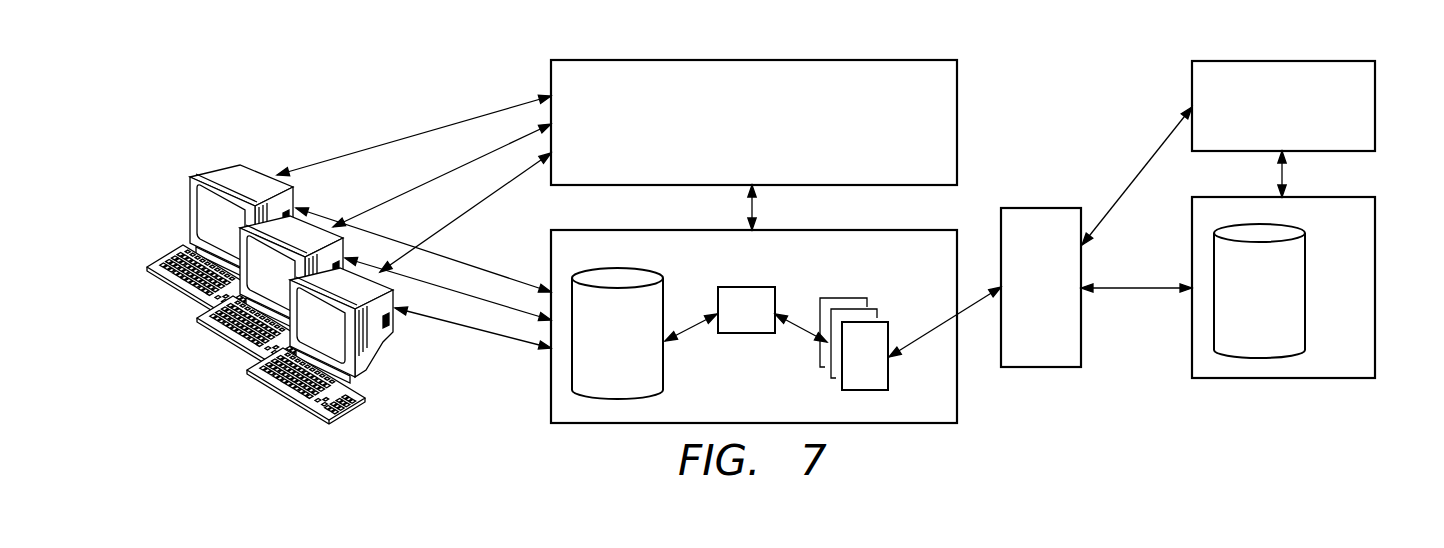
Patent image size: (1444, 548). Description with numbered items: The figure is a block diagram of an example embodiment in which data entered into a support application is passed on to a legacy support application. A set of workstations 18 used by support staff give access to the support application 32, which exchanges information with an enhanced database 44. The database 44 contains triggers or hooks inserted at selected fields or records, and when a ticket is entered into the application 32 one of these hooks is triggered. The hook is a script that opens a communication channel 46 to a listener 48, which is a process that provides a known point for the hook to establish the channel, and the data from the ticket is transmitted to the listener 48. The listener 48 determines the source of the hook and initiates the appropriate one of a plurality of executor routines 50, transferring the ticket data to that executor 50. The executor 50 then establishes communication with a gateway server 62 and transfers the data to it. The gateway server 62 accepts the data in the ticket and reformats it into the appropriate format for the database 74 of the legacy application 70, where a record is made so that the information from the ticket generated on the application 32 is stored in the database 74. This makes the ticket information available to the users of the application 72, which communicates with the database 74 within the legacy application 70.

The workstations 18 is at (137, 168).
The support application 32 is at (739, 133).
The database 44 is at (909, 273).
The communication channel 46 is at (697, 330).
The listener 48 is at (735, 323).
The executor routines 50 is at (842, 298).
The gateway server 62 is at (1028, 298).
The legacy application 70 is at (1309, 219).
The application 72 is at (1269, 118).
The database 74 is at (1283, 287).